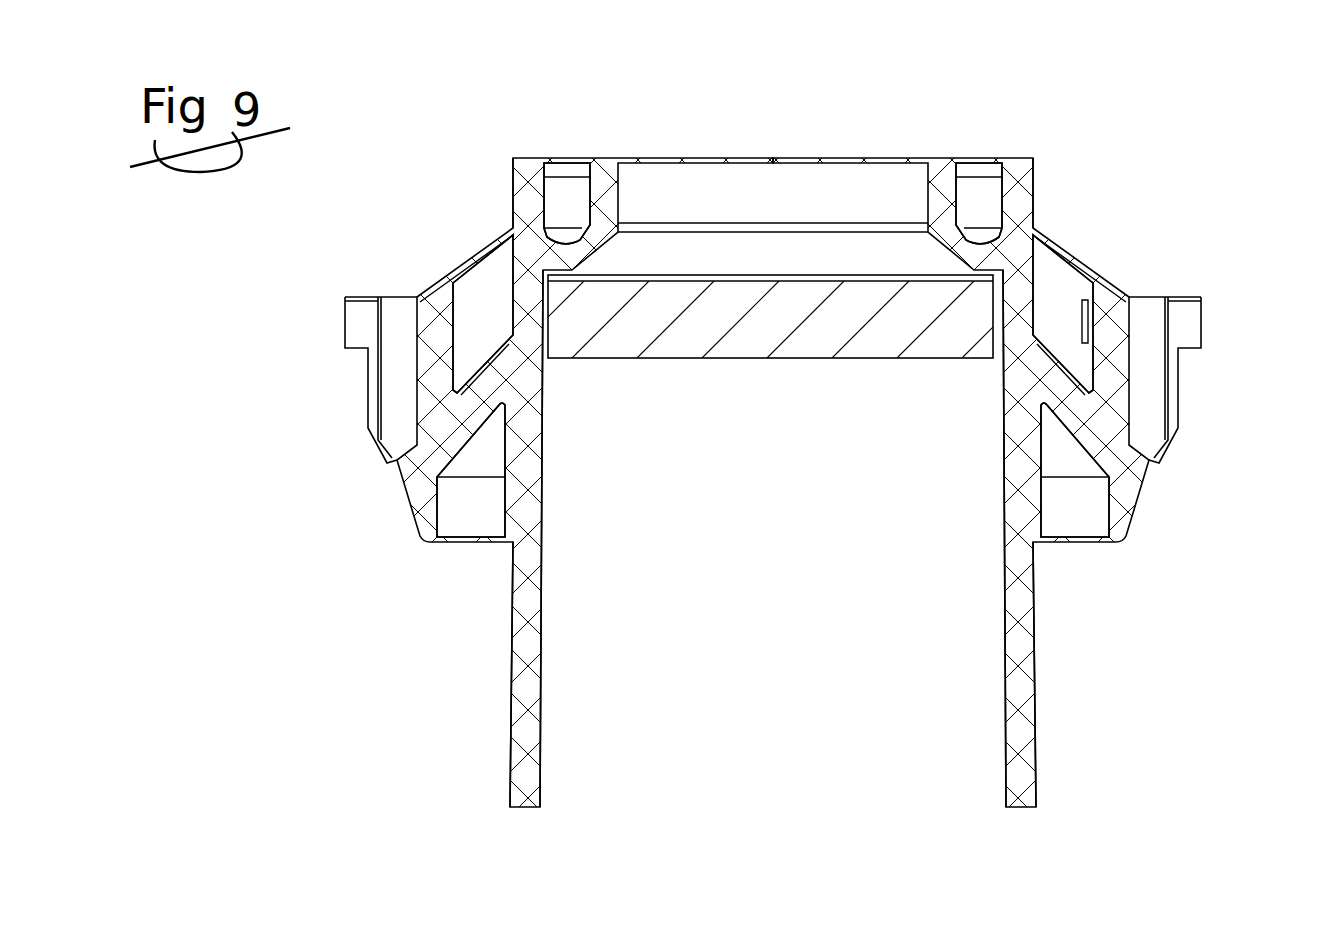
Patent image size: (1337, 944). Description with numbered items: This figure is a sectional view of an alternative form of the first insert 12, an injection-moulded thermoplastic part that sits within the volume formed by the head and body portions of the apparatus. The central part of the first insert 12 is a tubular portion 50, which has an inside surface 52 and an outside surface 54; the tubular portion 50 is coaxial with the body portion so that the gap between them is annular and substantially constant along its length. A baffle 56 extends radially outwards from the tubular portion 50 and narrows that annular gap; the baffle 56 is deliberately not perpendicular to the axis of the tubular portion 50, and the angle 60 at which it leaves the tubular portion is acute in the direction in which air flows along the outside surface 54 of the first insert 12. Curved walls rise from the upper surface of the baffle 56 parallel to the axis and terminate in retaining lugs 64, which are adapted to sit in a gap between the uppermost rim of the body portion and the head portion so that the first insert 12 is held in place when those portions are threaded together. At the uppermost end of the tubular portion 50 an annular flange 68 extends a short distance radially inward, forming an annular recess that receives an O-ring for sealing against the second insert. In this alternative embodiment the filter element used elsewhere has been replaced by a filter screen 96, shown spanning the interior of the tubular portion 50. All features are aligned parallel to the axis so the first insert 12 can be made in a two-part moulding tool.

The first insert 12 is at (768, 457).
The tubular portion 50 is at (777, 496).
The inside surface 52 is at (675, 538).
The outside surface 54 is at (702, 482).
The baffle 56 is at (440, 438).
The angle 60 is at (852, 471).
The lugs 64 is at (741, 335).
The annular flange 68 is at (773, 162).
The filter screen 96 is at (701, 272).